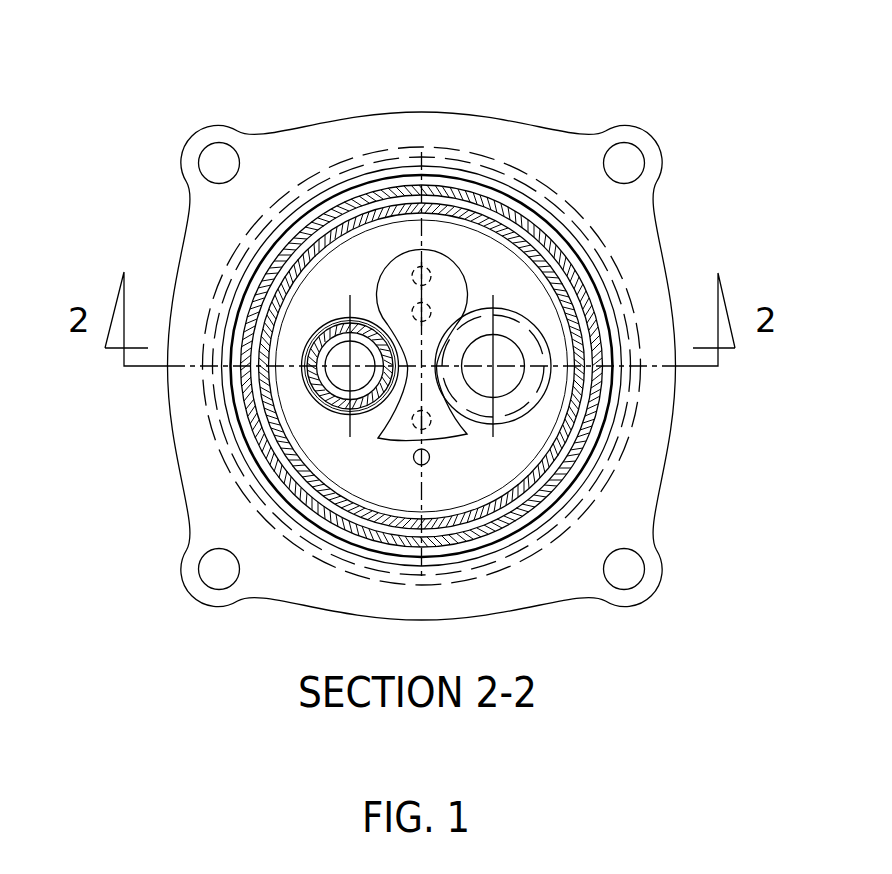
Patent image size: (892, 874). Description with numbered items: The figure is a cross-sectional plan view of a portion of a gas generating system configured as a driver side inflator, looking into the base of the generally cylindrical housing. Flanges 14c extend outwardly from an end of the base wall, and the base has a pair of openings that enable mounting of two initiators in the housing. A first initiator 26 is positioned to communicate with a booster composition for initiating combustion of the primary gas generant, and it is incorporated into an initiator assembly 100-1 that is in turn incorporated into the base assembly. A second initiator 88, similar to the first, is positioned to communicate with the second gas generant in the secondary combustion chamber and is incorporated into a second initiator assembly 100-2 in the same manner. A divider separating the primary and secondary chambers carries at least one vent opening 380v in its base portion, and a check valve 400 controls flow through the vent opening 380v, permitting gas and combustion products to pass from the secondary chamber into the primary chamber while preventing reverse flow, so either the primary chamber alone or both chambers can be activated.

The flange 14c is at (528, 155).
The first initiator 26 is at (335, 362).
The initiator assembly 100-1 is at (347, 322).
The second initiator assembly 100-2 is at (532, 335).
The second initiator 88 is at (532, 397).
The check valve 400 is at (397, 282).
The vent opening 380v is at (427, 270).